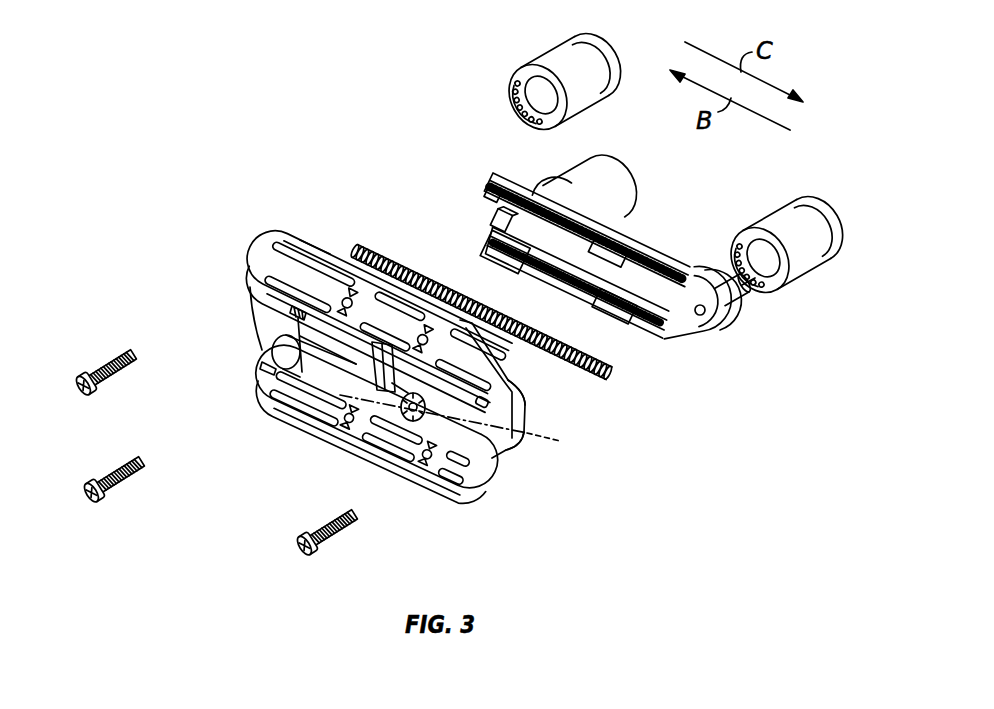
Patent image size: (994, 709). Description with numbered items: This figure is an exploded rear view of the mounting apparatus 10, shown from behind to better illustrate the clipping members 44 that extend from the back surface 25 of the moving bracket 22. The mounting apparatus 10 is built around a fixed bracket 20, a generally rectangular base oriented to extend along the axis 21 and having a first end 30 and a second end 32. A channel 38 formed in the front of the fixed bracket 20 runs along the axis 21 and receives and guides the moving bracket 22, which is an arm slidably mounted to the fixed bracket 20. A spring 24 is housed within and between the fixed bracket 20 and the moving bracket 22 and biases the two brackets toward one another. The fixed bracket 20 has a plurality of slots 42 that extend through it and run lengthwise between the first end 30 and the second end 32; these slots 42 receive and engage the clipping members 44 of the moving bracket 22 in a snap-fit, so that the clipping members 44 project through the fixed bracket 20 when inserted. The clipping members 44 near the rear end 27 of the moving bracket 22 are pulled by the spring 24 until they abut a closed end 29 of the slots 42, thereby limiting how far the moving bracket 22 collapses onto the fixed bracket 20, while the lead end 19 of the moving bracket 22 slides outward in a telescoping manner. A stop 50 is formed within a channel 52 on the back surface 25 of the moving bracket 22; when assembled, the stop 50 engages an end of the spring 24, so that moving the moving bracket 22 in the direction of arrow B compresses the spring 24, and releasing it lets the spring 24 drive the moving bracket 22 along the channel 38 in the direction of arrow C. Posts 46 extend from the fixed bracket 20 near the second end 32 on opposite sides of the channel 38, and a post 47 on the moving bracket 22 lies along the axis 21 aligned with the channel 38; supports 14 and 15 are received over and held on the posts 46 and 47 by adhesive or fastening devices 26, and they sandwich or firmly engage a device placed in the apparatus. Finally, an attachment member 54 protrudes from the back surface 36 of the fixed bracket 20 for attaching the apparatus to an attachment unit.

The mounting apparatus 10 is at (302, 146).
The support 14 is at (556, 60).
The support 15 is at (782, 215).
The lead end 19 is at (725, 306).
The fixed bracket 20 is at (492, 483).
The axis 21 is at (546, 458).
The moving bracket 22 is at (712, 334).
The spring 24 is at (615, 378).
The back surface 25 is at (668, 255).
The fastening device 26 is at (108, 362).
The rear end 27 is at (491, 174).
The closed end 29 is at (297, 318).
The first end 30 is at (524, 450).
The second end 32 is at (250, 250).
The back surface 36 is at (345, 440).
The channel 38 is at (530, 430).
The slot 42 is at (300, 310).
The clipping member 44 is at (487, 194).
The post 46 is at (333, 248).
The post 47 is at (752, 292).
The stop 50 is at (495, 220).
The channel 52 is at (655, 318).
The attachment member 54 is at (283, 403).